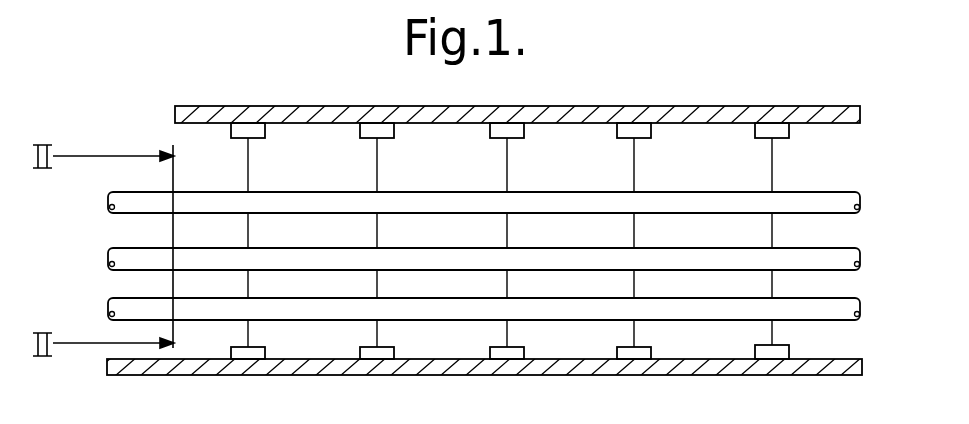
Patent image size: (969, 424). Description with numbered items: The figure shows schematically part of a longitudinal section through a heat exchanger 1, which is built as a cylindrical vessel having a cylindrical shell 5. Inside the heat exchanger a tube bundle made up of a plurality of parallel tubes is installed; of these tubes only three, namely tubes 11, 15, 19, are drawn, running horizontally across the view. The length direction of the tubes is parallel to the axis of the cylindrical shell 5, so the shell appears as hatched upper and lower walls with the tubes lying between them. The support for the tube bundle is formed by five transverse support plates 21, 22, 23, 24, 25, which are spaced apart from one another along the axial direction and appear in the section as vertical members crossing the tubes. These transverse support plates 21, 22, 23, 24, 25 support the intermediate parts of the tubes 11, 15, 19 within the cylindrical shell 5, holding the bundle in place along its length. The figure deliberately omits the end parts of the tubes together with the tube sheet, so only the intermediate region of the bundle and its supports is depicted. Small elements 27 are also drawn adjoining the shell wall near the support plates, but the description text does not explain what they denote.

The heat exchanger 1 is at (229, 106).
The cylindrical shell 5 is at (843, 105).
The tube 11 is at (862, 203).
The tube 15 is at (862, 259).
The tube 19 is at (862, 309).
The transverse support plate 21 is at (246, 331).
The transverse support plate 22 is at (375, 331).
The transverse support plate 23 is at (505, 331).
The transverse support plate 24 is at (632, 331).
The transverse support plate 25 is at (770, 328).
The upper pads 27 is at (360, 128).